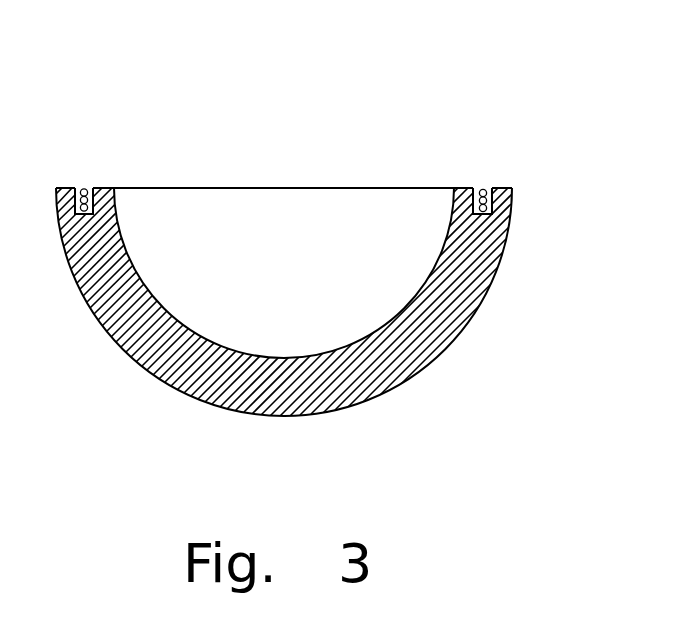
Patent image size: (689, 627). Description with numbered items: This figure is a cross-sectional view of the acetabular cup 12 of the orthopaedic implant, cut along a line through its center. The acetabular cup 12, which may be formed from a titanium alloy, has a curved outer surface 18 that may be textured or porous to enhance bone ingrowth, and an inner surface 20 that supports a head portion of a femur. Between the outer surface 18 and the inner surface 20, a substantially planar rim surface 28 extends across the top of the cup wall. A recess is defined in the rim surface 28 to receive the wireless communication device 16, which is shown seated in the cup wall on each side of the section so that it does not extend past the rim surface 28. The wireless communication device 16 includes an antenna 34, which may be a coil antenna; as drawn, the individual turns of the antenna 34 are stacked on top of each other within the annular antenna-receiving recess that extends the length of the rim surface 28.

The acetabular cup 12 is at (312, 221).
The wireless communication device 16 is at (82, 170).
The outer surface 18 is at (160, 382).
The inner surface 20 is at (345, 342).
The rim surface 28 is at (68, 188).
The antenna 34 is at (86, 190).